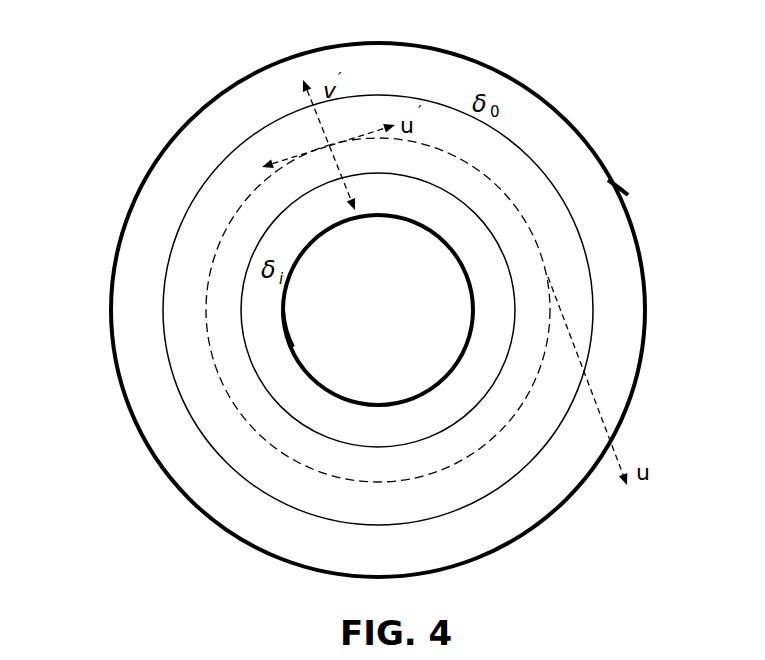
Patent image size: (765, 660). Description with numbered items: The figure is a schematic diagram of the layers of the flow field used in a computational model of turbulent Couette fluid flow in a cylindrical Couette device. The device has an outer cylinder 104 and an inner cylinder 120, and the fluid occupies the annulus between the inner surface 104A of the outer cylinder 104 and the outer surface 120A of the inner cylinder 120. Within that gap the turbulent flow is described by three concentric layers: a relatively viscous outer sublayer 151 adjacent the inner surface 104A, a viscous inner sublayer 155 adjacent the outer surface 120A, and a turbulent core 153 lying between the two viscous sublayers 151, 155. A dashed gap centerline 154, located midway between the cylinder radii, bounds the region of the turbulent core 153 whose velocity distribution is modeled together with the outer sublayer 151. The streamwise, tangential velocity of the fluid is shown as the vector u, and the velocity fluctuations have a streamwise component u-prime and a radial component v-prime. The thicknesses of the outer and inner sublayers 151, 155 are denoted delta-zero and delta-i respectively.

The outer cylinder 104 is at (441, 52).
The inner surface of the outer cylinder 104A is at (606, 178).
The inner cylinder 120 is at (400, 323).
The outer surface of the inner cylinder 120A is at (293, 347).
The viscous outer sublayer 151 is at (400, 565).
The turbulent core 153 is at (400, 522).
The gap centerline 154 is at (263, 440).
The viscous inner sublayer 155 is at (400, 443).